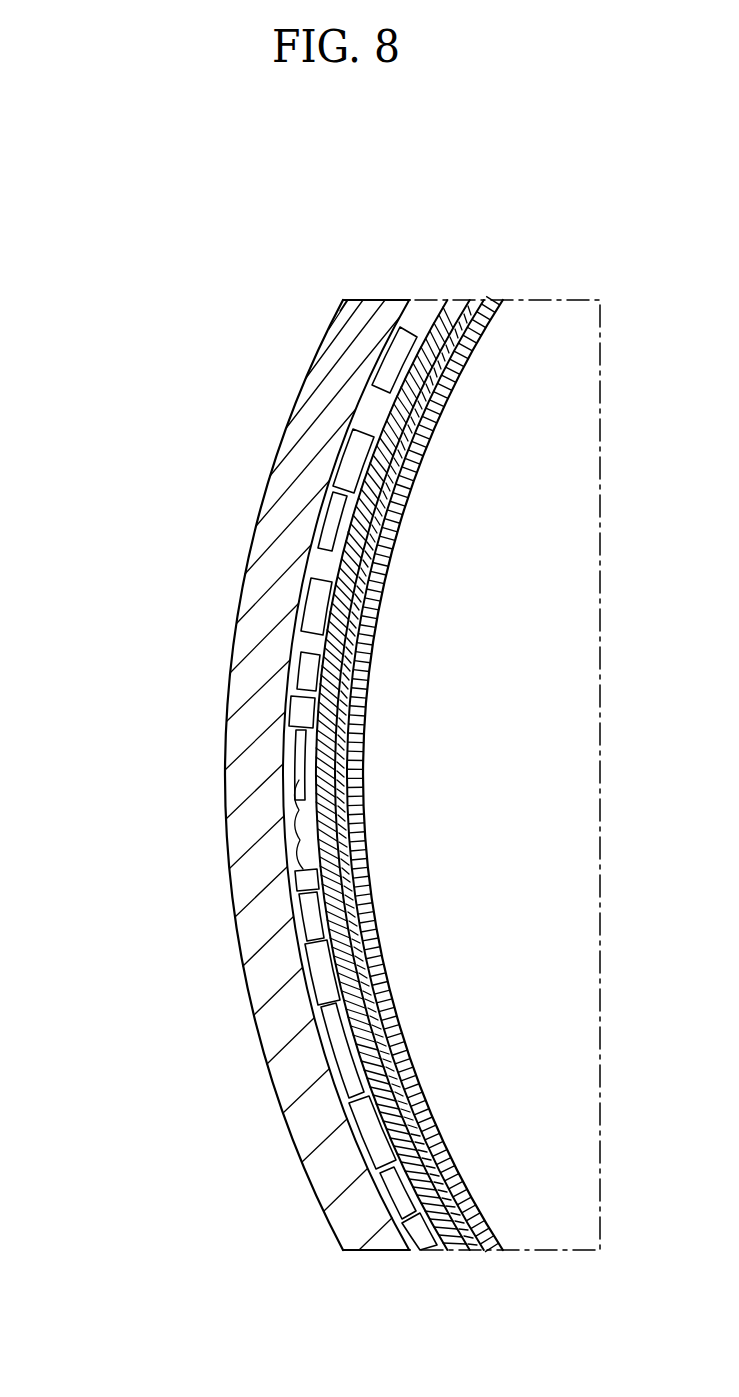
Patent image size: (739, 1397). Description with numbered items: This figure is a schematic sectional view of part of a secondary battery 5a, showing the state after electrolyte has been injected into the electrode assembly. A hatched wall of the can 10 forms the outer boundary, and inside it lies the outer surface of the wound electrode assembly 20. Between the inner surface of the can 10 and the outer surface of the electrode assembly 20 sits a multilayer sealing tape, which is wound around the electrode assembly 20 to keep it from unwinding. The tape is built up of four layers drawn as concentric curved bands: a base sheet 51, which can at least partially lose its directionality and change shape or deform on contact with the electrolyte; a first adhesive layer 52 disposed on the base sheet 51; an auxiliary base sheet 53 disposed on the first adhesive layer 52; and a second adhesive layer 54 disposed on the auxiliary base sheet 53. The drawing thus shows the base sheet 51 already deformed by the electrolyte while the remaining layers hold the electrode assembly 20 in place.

The secondary battery 5a is at (208, 287).
The can 10 is at (257, 674).
The electrode assembly 20 is at (460, 617).
The base sheet 51 is at (350, 1103).
The first adhesive layer 52 is at (340, 958).
The auxiliary base sheet 53 is at (327, 874).
The second adhesive layer 54 is at (360, 790).